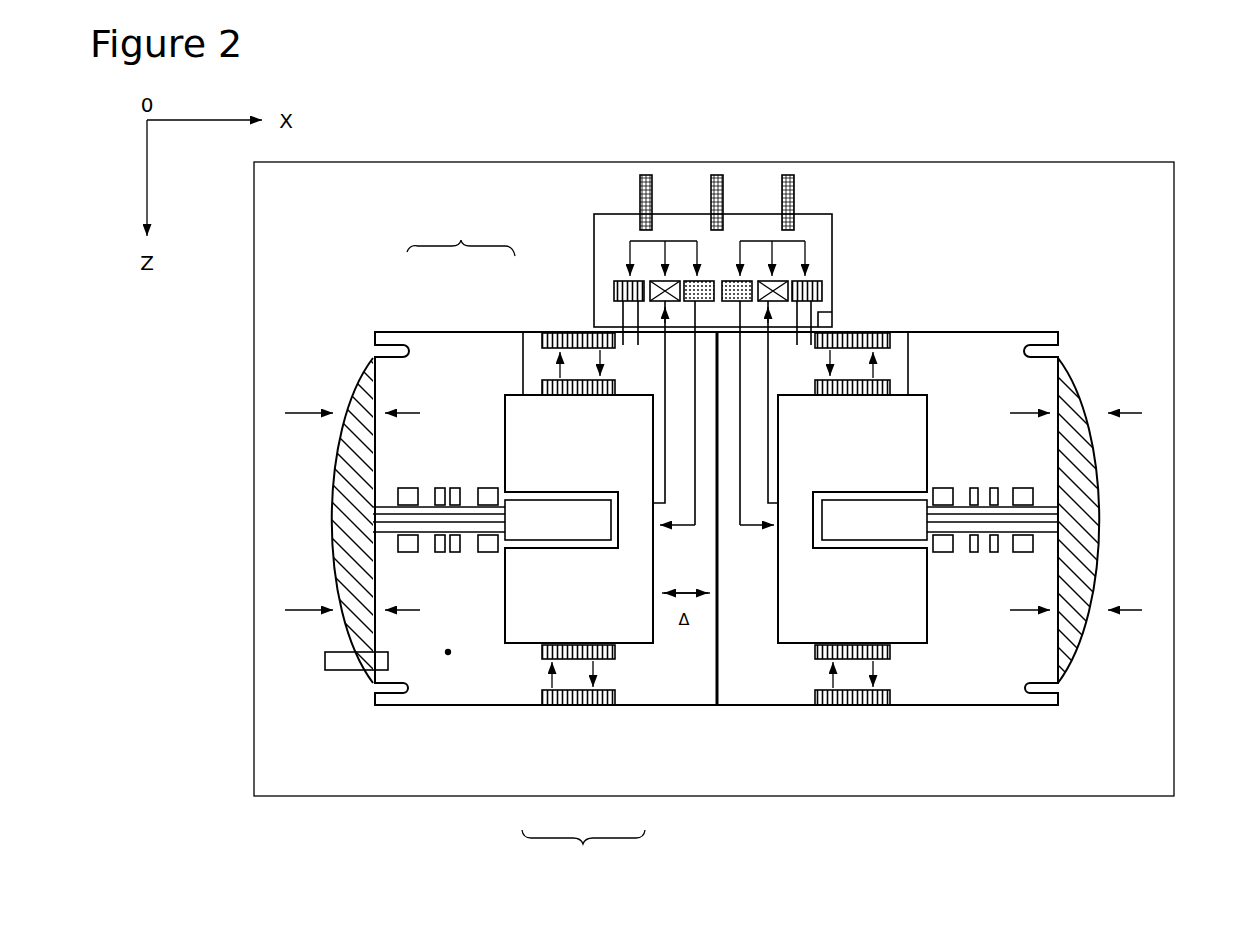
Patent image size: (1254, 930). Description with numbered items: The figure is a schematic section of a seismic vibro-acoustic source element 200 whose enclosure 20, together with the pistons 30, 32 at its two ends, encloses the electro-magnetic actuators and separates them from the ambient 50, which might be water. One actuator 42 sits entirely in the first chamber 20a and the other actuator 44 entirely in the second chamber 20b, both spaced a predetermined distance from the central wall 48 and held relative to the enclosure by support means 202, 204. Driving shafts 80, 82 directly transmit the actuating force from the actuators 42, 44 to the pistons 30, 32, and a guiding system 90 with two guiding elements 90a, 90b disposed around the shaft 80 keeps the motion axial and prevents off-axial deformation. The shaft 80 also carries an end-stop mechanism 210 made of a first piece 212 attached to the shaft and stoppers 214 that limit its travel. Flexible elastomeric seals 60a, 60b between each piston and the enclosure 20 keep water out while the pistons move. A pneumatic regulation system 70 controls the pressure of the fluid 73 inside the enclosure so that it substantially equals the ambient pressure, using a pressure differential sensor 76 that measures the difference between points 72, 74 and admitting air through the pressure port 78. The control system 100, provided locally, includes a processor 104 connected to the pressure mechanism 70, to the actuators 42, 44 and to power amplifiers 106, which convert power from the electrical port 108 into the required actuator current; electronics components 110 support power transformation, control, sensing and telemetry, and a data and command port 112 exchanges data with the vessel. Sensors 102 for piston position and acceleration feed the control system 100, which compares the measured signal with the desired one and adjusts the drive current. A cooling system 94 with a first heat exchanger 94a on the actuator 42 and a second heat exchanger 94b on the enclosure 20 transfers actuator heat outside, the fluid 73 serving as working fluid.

The enclosure 20 is at (950, 333).
The first chamber 20a is at (657, 687).
The second chamber 20b is at (982, 683).
The piston 30 is at (360, 403).
The piston 32 is at (1073, 386).
The actuator 42 is at (525, 628).
The actuator 44 is at (910, 630).
The wall 48 is at (718, 677).
The ambient 50 is at (1142, 205).
The seal 60a is at (372, 688).
The seal 60b is at (1050, 690).
The pneumatic regulation system 70 is at (630, 279).
The point 72 is at (327, 680).
The fluid 73 is at (449, 655).
The point 74 is at (418, 698).
The pressure differential sensor 76 is at (325, 662).
The pressure port 78 is at (641, 180).
The driving shaft 80 is at (373, 503).
The driving shaft 82 is at (1050, 528).
The guiding system 90 is at (613, 387).
The guiding element 90a is at (406, 488).
The guiding element 90b is at (488, 488).
The cooling system 94 is at (706, 601).
The first heat exchanger 94a is at (607, 660).
The second heat exchanger 94b is at (568, 707).
The control system 100 is at (832, 238).
The sensors 102 is at (345, 455).
The processor 104 is at (668, 278).
The power amplifiers 106 is at (710, 280).
The electrical port 108 is at (711, 181).
The electronics components 110 is at (832, 316).
The data and command port 112 is at (790, 180).
The seismic vibro-acoustic source element 200 is at (746, 284).
The support means 202 is at (520, 368).
The support means 204 is at (910, 350).
The end-stop mechanism 210 is at (443, 567).
The first piece 212 is at (444, 487).
The stoppers 214 is at (440, 550).